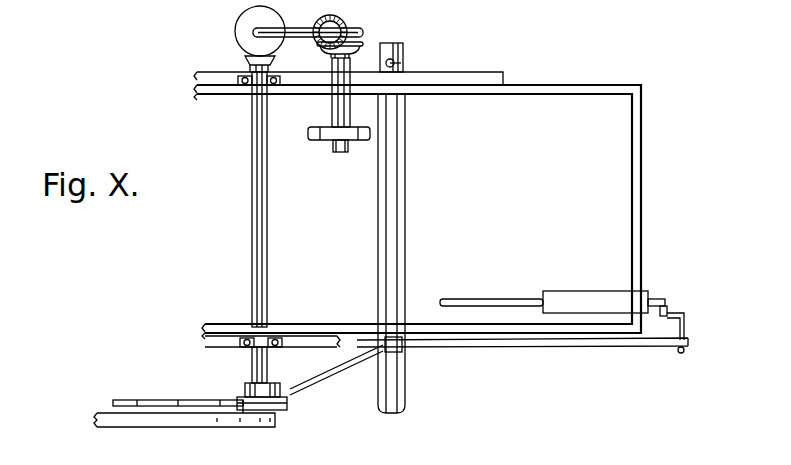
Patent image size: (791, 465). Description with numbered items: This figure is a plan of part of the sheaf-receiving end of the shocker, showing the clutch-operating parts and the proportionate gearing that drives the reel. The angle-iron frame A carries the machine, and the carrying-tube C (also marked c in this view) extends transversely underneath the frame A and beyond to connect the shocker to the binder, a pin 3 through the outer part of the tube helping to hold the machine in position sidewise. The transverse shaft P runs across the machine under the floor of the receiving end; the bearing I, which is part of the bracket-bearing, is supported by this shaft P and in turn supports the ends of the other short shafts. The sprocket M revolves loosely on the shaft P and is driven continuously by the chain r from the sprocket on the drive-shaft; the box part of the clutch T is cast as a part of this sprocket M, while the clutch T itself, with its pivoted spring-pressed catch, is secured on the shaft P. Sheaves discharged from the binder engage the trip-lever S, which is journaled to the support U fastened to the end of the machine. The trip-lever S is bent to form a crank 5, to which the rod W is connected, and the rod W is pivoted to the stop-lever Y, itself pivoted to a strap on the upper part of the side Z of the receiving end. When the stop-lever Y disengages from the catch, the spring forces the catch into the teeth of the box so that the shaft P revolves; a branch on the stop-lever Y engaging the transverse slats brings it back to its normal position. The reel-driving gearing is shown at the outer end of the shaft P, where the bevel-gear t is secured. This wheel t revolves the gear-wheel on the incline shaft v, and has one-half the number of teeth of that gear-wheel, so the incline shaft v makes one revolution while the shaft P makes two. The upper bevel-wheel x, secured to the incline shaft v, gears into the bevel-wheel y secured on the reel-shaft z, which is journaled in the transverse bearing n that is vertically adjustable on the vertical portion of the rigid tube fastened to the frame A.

The side of the receiving end Z is at (567, 86).
The angle-iron frame A is at (204, 77).
The support U is at (243, 30).
The bevel-gear t is at (270, 60).
The incline shaft v is at (310, 27).
The upper bevel-wheel x is at (336, 13).
The bevel-wheel y is at (363, 48).
The transverse bearing n is at (348, 111).
The transverse shaft z is at (340, 152).
The post c is at (403, 48).
The pin 3 is at (401, 63).
The carrying-tube C is at (406, 386).
The shaft P is at (252, 229).
The clutch T is at (250, 386).
The sprocket M is at (288, 405).
The chain r is at (159, 403).
The bearing I is at (180, 426).
The stop-lever Y is at (355, 358).
The trip-lever S is at (491, 300).
The crank 5 is at (698, 278).
The rod W is at (686, 322).